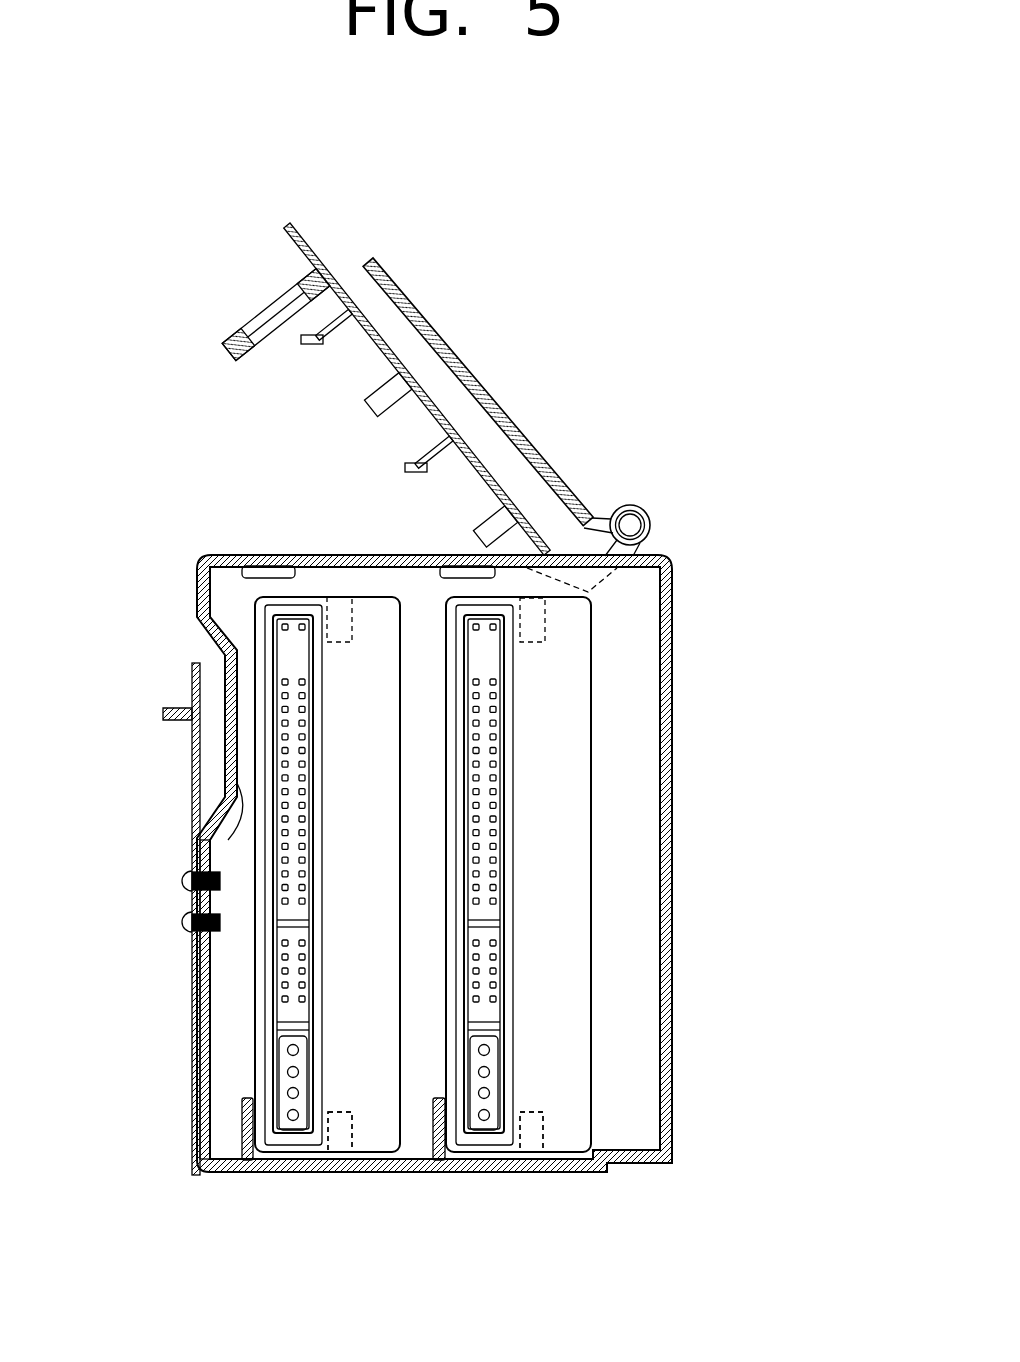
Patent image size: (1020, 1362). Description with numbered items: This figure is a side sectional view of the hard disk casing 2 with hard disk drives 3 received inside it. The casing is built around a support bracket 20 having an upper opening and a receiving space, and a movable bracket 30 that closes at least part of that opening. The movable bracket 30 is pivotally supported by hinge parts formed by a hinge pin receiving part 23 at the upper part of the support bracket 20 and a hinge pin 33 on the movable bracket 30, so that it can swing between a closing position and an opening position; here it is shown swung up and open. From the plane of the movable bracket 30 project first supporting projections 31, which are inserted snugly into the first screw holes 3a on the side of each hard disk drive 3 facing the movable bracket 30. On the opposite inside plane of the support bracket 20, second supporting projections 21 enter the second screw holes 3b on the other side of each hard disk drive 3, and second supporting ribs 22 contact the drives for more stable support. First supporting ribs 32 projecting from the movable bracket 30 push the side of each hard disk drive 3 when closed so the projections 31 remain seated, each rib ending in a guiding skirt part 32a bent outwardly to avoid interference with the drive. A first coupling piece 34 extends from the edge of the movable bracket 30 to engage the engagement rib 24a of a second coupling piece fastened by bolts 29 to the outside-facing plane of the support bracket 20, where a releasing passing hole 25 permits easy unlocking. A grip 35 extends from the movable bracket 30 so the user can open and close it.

The hard disk casing 2 is at (763, 303).
The hard disk drive 3 is at (573, 698).
The first screw holes 3a is at (343, 597).
The second screw holes 3b is at (340, 1112).
The support bracket 20 is at (670, 910).
The second supporting projection 21 is at (322, 1172).
The second supporting rib 22 is at (238, 1142).
The hinge pin receiving parts 23 is at (642, 505).
The engagement rib 24a is at (162, 714).
The releasing passing hole 25 is at (203, 853).
The bolts 29 is at (178, 922).
The movable bracket 30 is at (438, 356).
The first supporting projection 31 is at (368, 412).
The first supporting rib 32 is at (300, 340).
The guiding skirt part 32a is at (306, 344).
The hinge pins 33 is at (648, 527).
The first coupling piece 34 is at (237, 333).
The grip 35 is at (292, 225).